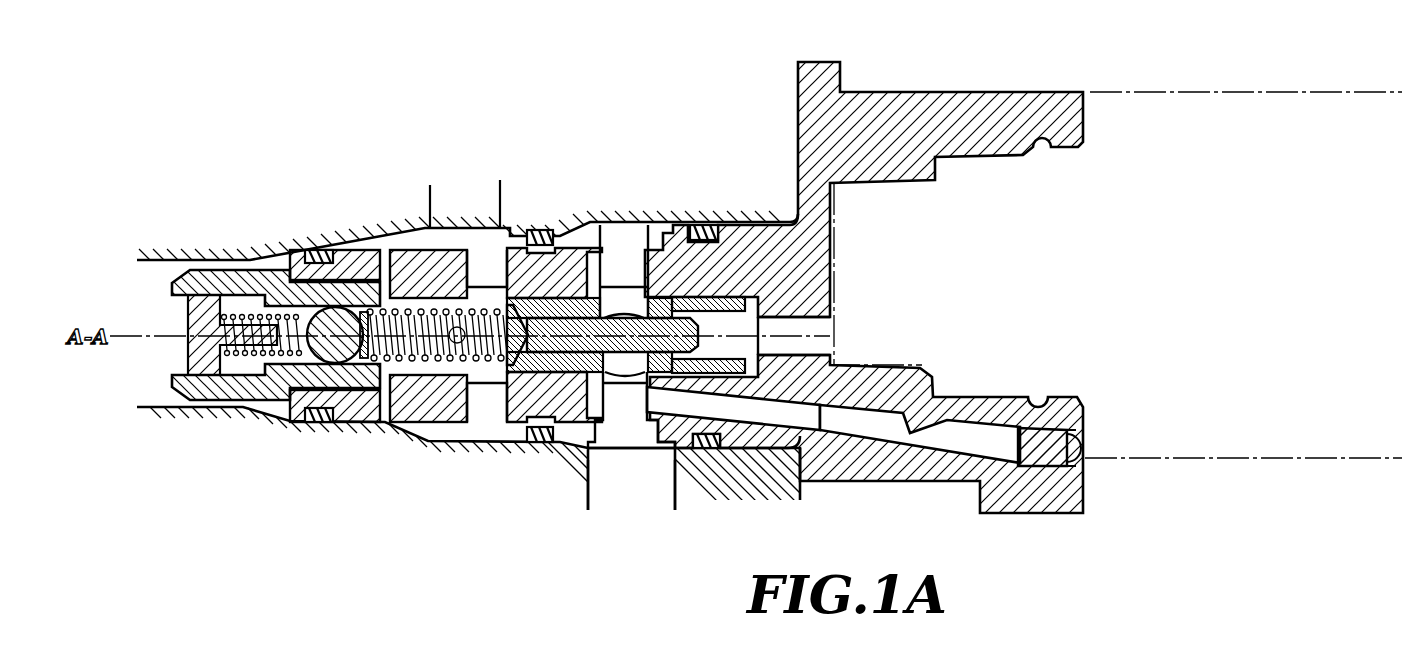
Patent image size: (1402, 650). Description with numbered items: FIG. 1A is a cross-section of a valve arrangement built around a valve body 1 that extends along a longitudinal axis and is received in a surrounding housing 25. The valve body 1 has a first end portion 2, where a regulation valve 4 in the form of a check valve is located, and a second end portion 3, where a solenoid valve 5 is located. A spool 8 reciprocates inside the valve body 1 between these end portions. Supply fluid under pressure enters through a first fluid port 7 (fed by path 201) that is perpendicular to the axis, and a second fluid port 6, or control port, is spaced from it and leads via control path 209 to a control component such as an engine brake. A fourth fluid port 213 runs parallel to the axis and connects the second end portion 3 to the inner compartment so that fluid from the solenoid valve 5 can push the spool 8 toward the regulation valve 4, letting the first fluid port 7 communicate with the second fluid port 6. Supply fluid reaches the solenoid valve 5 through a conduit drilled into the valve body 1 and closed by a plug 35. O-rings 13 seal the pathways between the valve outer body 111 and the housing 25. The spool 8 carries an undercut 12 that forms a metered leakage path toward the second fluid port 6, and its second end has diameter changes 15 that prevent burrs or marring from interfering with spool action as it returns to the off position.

The valve body 1 is at (925, 108).
The first end portion 2 is at (338, 418).
The second end portion 3 is at (905, 480).
The regulation valve 4 is at (245, 290).
The solenoid valve 5 is at (1240, 88).
The second fluid port 6 is at (485, 265).
The first fluid port 7 is at (640, 405).
The spool 8 is at (617, 300).
The undercut 12 is at (533, 372).
The O-rings 13 is at (318, 255).
The diameter changes 15 is at (752, 300).
The housing 25 is at (473, 430).
The plug 35 is at (1050, 455).
The valve outer body 111 is at (455, 265).
The path 201 is at (608, 480).
The control path 209 is at (430, 190).
The fourth fluid port 213 is at (805, 330).